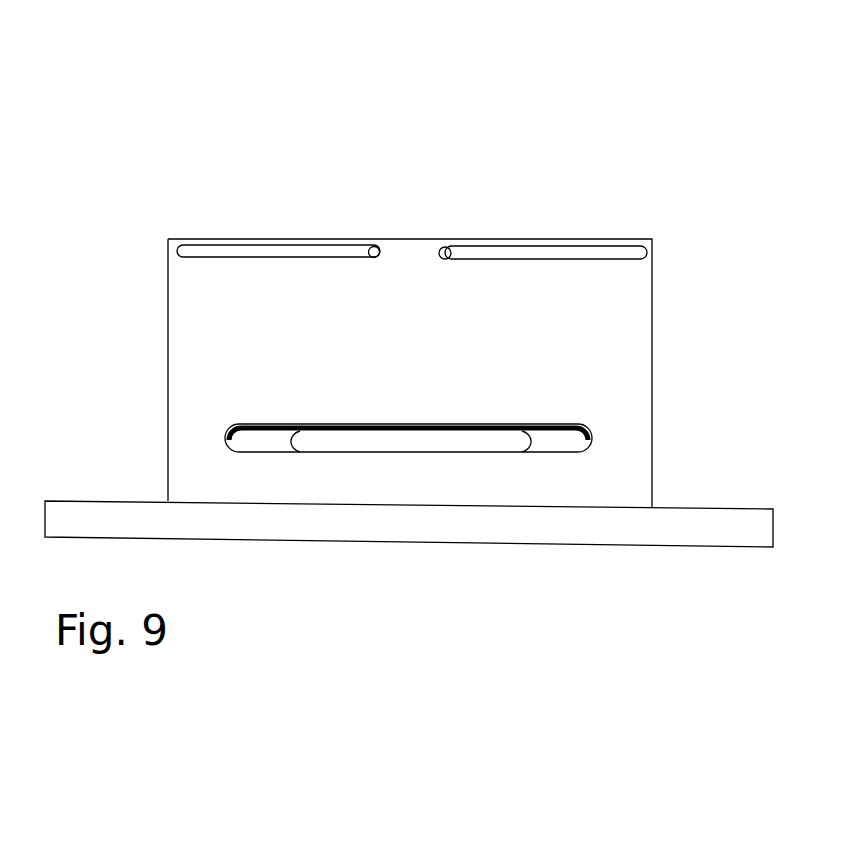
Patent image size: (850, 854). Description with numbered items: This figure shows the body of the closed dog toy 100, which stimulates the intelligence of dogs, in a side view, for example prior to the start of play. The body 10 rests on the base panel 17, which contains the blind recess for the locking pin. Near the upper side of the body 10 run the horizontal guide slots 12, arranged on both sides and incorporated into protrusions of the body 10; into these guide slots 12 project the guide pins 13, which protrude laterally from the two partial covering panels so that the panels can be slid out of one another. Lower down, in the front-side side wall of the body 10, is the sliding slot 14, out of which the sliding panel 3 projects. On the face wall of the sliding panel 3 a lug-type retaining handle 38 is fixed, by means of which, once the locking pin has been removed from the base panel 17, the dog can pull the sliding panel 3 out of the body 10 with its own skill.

The toy 100 is at (210, 64).
The body 10 is at (397, 293).
The guide slots 12 is at (227, 258).
The guide pins 13 is at (375, 247).
The sliding slot 14 is at (573, 427).
The sliding panel 3 is at (572, 443).
The retaining handle 38 is at (345, 438).
The base panel 17 is at (752, 528).